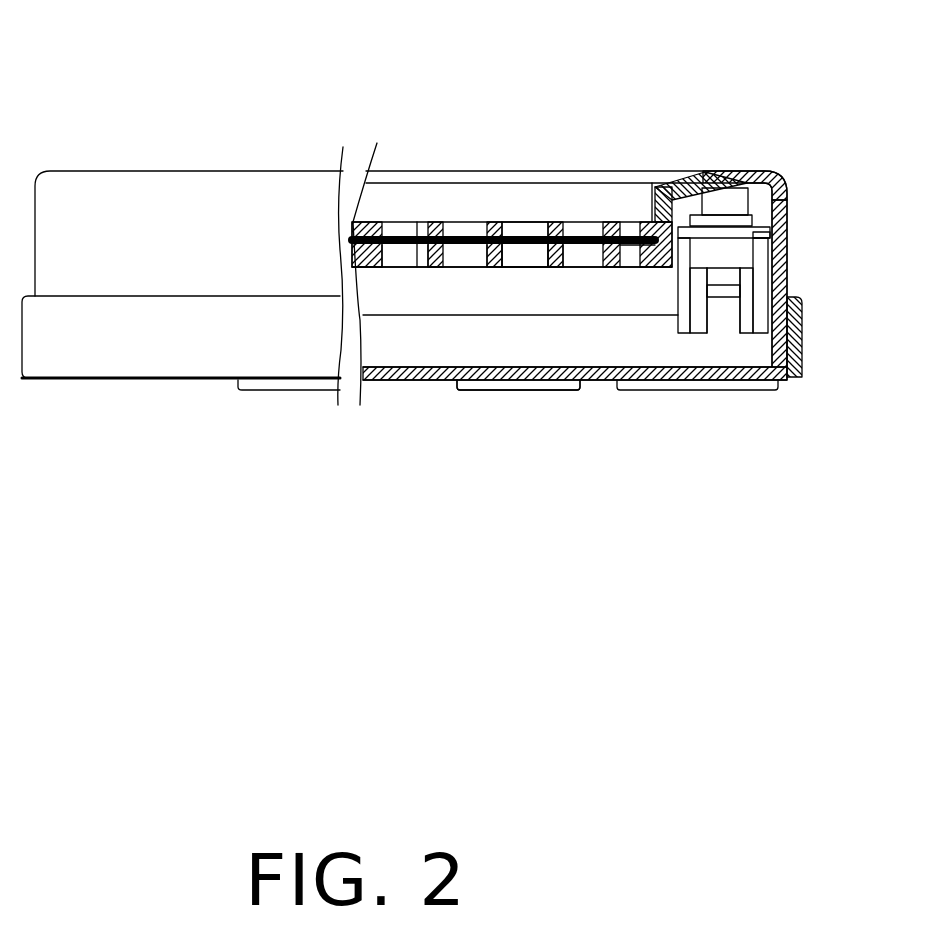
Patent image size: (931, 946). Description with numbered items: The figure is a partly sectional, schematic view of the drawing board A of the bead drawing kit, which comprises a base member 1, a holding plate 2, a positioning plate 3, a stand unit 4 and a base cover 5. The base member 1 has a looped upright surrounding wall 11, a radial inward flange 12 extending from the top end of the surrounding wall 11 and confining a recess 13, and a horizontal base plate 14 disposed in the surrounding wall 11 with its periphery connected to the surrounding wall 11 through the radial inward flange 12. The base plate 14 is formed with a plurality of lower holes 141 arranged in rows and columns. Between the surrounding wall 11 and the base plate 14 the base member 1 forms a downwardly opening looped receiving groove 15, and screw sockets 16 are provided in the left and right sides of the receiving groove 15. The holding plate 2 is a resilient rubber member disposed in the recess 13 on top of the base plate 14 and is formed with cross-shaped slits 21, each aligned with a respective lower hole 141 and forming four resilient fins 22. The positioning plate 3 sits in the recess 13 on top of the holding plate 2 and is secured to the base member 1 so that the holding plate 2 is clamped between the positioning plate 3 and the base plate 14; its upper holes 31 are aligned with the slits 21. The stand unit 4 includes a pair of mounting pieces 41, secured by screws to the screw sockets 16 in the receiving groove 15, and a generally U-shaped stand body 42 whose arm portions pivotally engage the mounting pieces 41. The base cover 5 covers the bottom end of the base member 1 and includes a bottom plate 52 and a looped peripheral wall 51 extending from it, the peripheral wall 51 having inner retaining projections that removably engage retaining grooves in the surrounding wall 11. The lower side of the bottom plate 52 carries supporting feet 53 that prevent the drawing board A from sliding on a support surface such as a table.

The base member 1 is at (785, 170).
The surrounding wall 11 is at (782, 277).
The radial inward flange 12 is at (723, 180).
The recess 13 is at (665, 198).
The base plate 14 is at (640, 255).
The lower holes 141 is at (410, 255).
The receiving groove 15 is at (757, 203).
The screw sockets 16 is at (742, 193).
The holding plate 2 is at (597, 270).
The cross-shaped slits 21 is at (533, 227).
The resilient fins 22 is at (497, 290).
The positioning plate 3 is at (645, 207).
The upper holes 31 is at (417, 227).
The stand unit 4 is at (728, 343).
The mounting pieces 41 is at (788, 231).
The stand body 42 is at (797, 372).
The base cover 5 is at (790, 381).
The peripheral wall 51 is at (748, 317).
The bottom plate 52 is at (712, 345).
The supporting feet 53 is at (505, 388).
The drawing board A is at (791, 254).